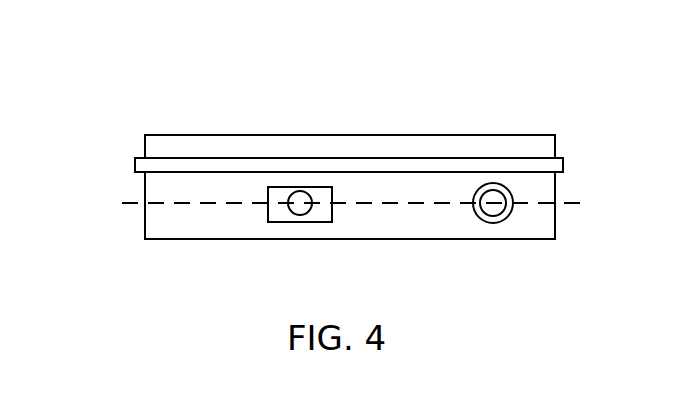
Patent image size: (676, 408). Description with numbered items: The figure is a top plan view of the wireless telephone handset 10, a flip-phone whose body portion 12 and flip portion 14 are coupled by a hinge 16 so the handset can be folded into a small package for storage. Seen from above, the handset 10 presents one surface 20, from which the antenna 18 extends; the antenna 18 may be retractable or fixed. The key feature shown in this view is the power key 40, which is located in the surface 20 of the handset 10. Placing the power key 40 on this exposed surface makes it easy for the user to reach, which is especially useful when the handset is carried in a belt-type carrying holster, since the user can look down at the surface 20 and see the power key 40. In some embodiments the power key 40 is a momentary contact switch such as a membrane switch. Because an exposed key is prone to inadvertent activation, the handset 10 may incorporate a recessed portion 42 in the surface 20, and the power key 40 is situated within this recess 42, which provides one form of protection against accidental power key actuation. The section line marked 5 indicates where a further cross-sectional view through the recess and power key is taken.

The wireless telephone handset 10 is at (577, 112).
The body portion 12 is at (145, 223).
The flip portion 14 is at (215, 135).
The hinge 16 is at (295, 165).
The antenna 18 is at (499, 208).
The surface 20 is at (193, 227).
The power key 40 is at (300, 207).
The recessed portion 42 is at (270, 213).
The section line 5- 5 is at (122, 203).